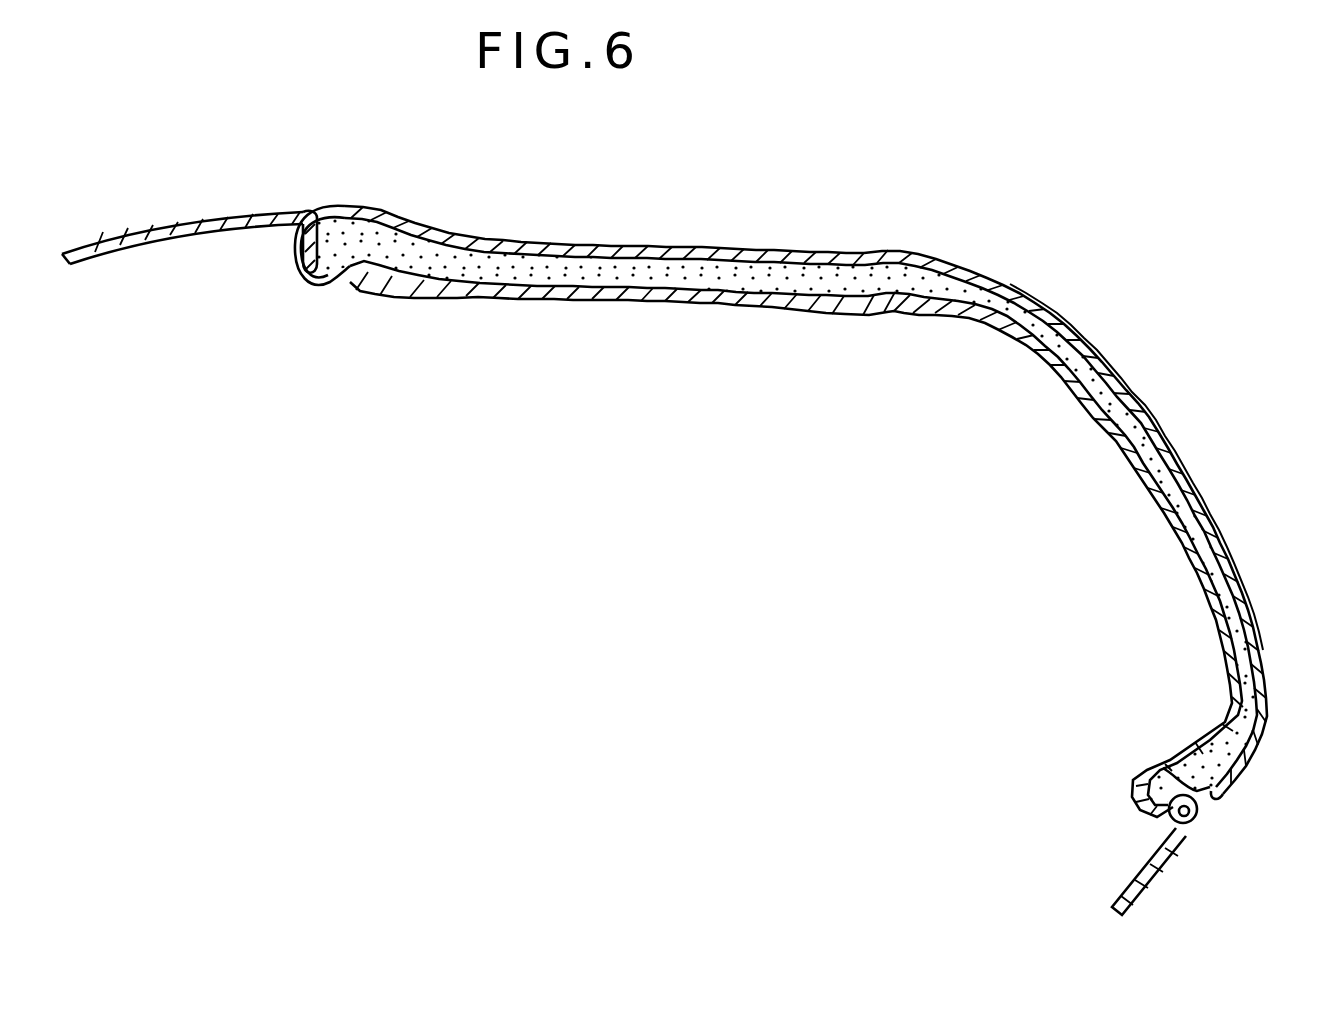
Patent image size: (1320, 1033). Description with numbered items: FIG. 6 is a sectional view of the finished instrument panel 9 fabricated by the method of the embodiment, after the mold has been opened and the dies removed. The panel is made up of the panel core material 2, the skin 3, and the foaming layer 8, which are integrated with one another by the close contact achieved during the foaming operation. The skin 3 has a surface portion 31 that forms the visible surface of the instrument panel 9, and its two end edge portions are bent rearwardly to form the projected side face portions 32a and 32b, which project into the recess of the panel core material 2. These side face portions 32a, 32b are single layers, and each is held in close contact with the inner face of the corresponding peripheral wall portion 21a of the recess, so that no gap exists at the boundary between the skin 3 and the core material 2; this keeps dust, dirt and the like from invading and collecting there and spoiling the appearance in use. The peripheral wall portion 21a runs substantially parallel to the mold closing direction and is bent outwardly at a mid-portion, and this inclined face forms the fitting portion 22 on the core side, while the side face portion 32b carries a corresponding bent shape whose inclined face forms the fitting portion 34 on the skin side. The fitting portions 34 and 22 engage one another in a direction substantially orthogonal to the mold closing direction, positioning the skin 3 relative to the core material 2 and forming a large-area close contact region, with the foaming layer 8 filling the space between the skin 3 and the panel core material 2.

The panel core material 2 is at (816, 313).
The skin 3 is at (1035, 302).
The foaming layer 8 is at (622, 276).
The instrument panel 9 is at (664, 175).
The peripheral wall portion 21a is at (297, 262).
The fitting portion 22 is at (1188, 838).
The surface portion 31 is at (819, 250).
The side face portion 32a is at (336, 274).
The side face portion 32b is at (1165, 768).
The fitting portion 34 is at (1219, 789).